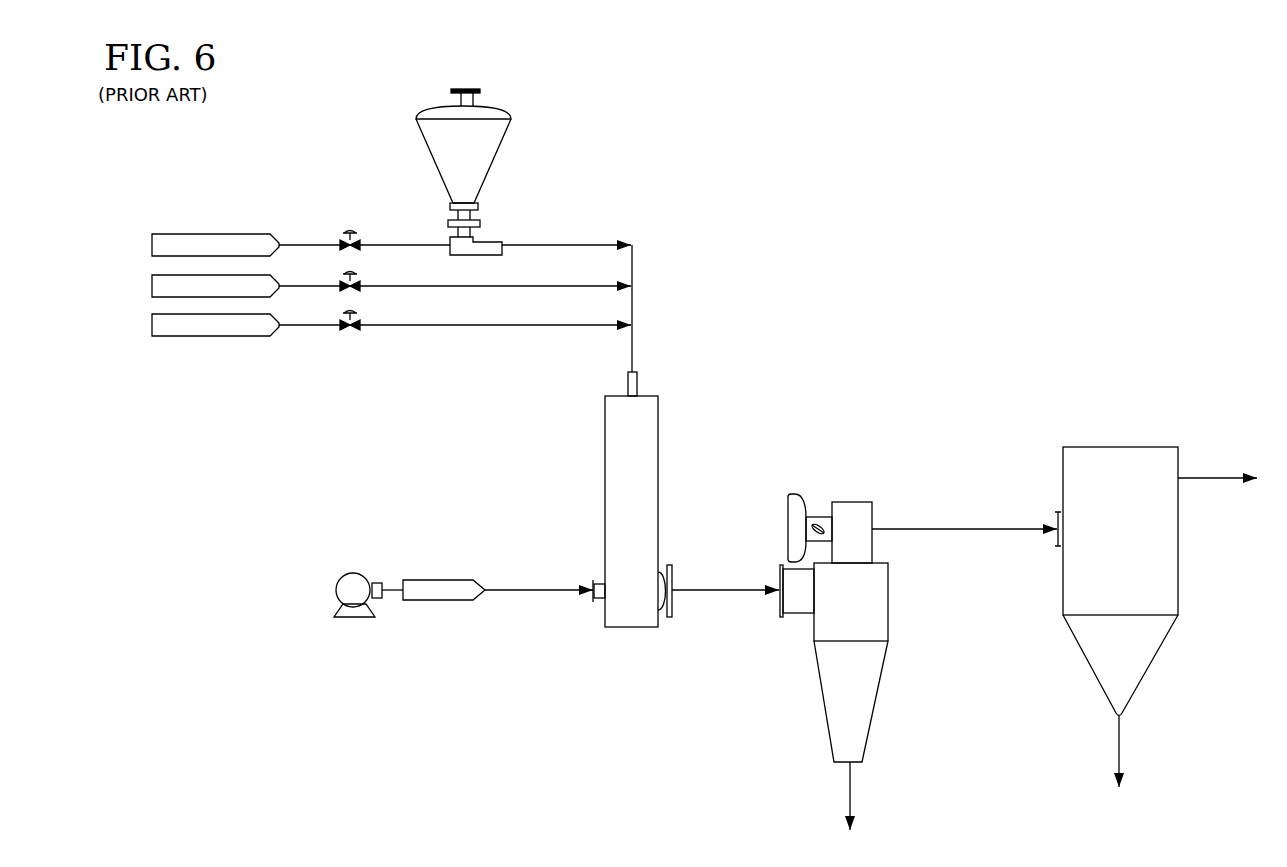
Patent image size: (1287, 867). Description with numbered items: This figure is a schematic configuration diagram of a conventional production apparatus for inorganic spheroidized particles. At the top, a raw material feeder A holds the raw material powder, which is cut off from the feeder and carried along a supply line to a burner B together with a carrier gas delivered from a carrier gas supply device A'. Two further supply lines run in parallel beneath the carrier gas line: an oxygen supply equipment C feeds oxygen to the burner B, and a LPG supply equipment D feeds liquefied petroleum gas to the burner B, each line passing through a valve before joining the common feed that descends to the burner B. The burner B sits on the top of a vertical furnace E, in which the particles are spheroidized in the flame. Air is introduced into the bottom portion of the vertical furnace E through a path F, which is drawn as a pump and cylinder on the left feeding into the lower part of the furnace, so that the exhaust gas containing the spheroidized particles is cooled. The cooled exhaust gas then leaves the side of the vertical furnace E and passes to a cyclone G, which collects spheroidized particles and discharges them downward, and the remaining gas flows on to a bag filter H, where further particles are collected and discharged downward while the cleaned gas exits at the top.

The raw material feeder A is at (437, 172).
The carrier gas supply device A' is at (362, 246).
The burner B is at (627, 380).
The oxygen supply equipment C is at (152, 285).
The LPG supply equipment D is at (152, 324).
The vertical furnace E is at (633, 470).
The path F is at (527, 592).
The cyclone G is at (866, 607).
The bag filter H is at (1157, 538).